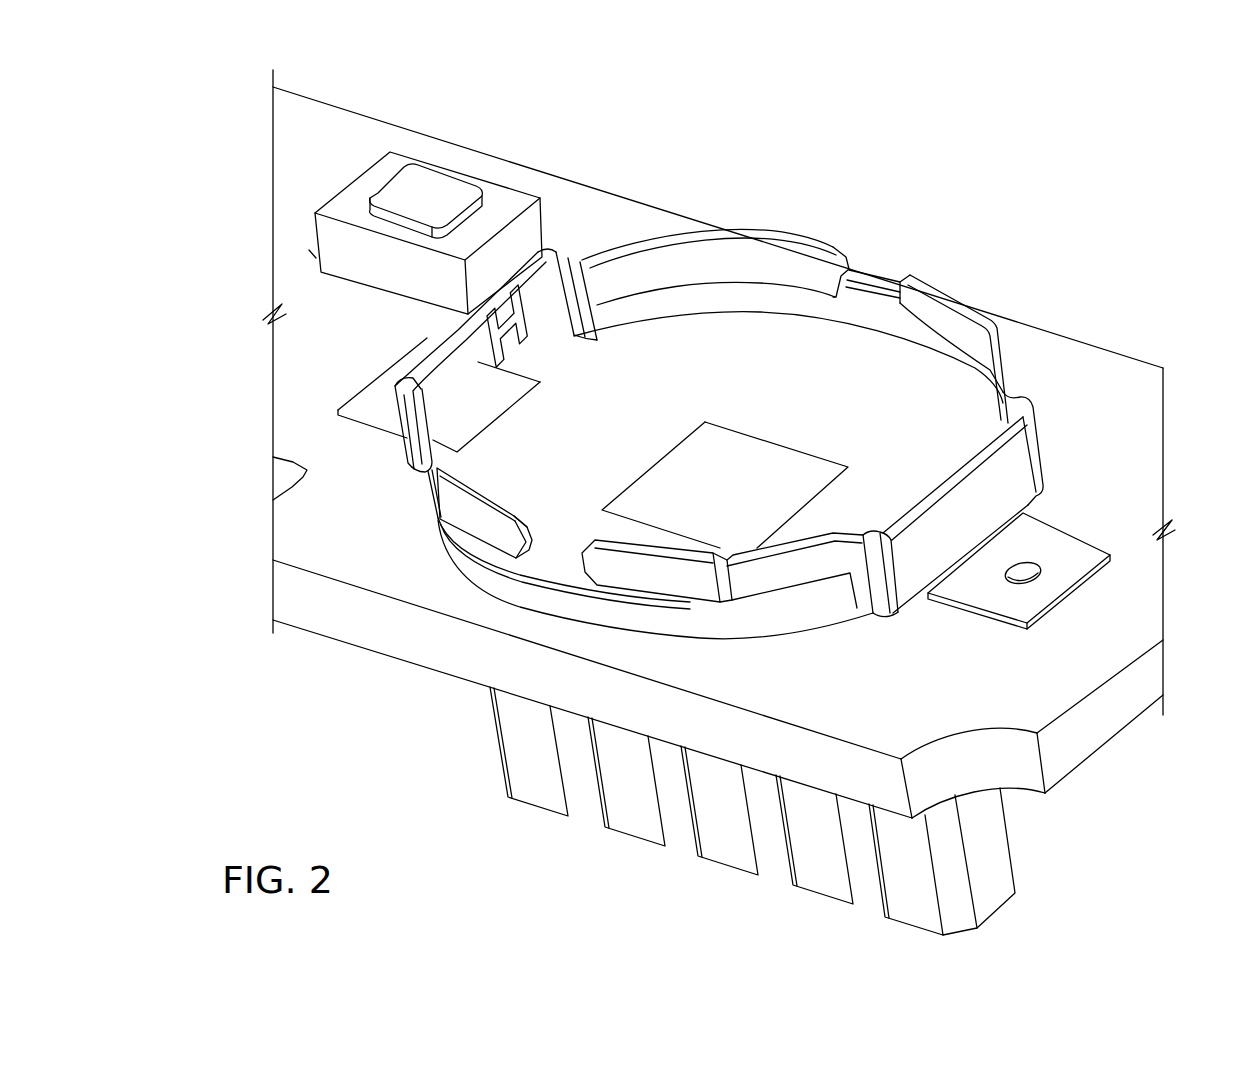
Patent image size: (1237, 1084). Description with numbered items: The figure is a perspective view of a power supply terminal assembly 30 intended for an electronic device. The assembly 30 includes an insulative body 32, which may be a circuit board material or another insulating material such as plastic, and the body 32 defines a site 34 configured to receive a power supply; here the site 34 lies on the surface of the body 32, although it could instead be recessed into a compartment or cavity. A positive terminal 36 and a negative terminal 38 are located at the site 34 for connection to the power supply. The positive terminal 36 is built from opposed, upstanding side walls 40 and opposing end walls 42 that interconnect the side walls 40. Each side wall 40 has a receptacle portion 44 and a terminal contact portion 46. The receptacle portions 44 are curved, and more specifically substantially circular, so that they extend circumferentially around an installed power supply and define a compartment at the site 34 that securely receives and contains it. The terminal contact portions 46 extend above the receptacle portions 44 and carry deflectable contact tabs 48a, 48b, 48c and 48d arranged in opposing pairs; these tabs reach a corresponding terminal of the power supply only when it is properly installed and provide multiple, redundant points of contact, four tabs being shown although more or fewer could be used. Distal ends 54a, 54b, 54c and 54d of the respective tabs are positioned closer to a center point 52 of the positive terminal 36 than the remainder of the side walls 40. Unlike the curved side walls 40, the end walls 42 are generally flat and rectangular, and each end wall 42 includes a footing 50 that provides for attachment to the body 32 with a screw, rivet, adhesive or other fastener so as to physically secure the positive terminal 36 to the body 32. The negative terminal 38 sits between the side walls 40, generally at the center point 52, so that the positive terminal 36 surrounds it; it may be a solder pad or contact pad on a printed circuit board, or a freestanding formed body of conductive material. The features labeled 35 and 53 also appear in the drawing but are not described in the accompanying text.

The power supply terminal assembly 30 is at (1045, 197).
The insulative body 32 is at (719, 502).
The site 34 is at (855, 357).
The battery receiving space 35 is at (677, 374).
The positive terminal 36 is at (628, 252).
The negative terminal 38 is at (725, 473).
The side walls 40 is at (919, 345).
The end walls 42 is at (453, 355).
The receptacle portion 44 is at (757, 300).
The terminal contact portion 46 is at (668, 269).
The contact tab 48a is at (702, 253).
The contact tab 48b is at (950, 291).
The contact tab 48c is at (483, 522).
The contact tab 48d is at (658, 578).
The footing 50 is at (373, 395).
The center point 52 is at (723, 489).
The connector pins 53 is at (637, 840).
The distal end 54a is at (837, 273).
The distal end 54b is at (903, 287).
The distal end 54c is at (537, 540).
The distal end 54d is at (578, 574).